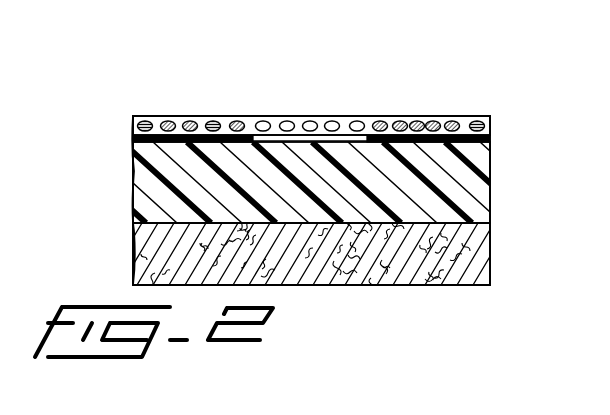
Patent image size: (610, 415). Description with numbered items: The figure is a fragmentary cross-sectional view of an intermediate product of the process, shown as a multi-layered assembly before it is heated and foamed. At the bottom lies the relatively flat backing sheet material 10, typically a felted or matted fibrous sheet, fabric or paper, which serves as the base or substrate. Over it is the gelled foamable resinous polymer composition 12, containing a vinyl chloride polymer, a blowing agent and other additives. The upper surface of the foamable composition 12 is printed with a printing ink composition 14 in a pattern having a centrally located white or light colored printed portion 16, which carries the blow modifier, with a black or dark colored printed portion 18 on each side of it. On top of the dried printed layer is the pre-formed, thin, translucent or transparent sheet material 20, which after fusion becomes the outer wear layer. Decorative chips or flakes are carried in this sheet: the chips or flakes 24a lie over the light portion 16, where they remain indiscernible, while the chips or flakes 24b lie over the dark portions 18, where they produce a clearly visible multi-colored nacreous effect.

The backing sheet material 10 is at (490, 262).
The foamable resinous polymer composition 12 is at (490, 200).
The printing ink composition 14 is at (132, 136).
The light colored printed portion 16 is at (345, 116).
The dark colored printed portion 18 is at (225, 116).
The translucent or transparent sheet material 20 is at (490, 116).
The chips or flakes over light printed portion 24a is at (270, 116).
The chips or flakes over dark printed portion 24b is at (147, 116).